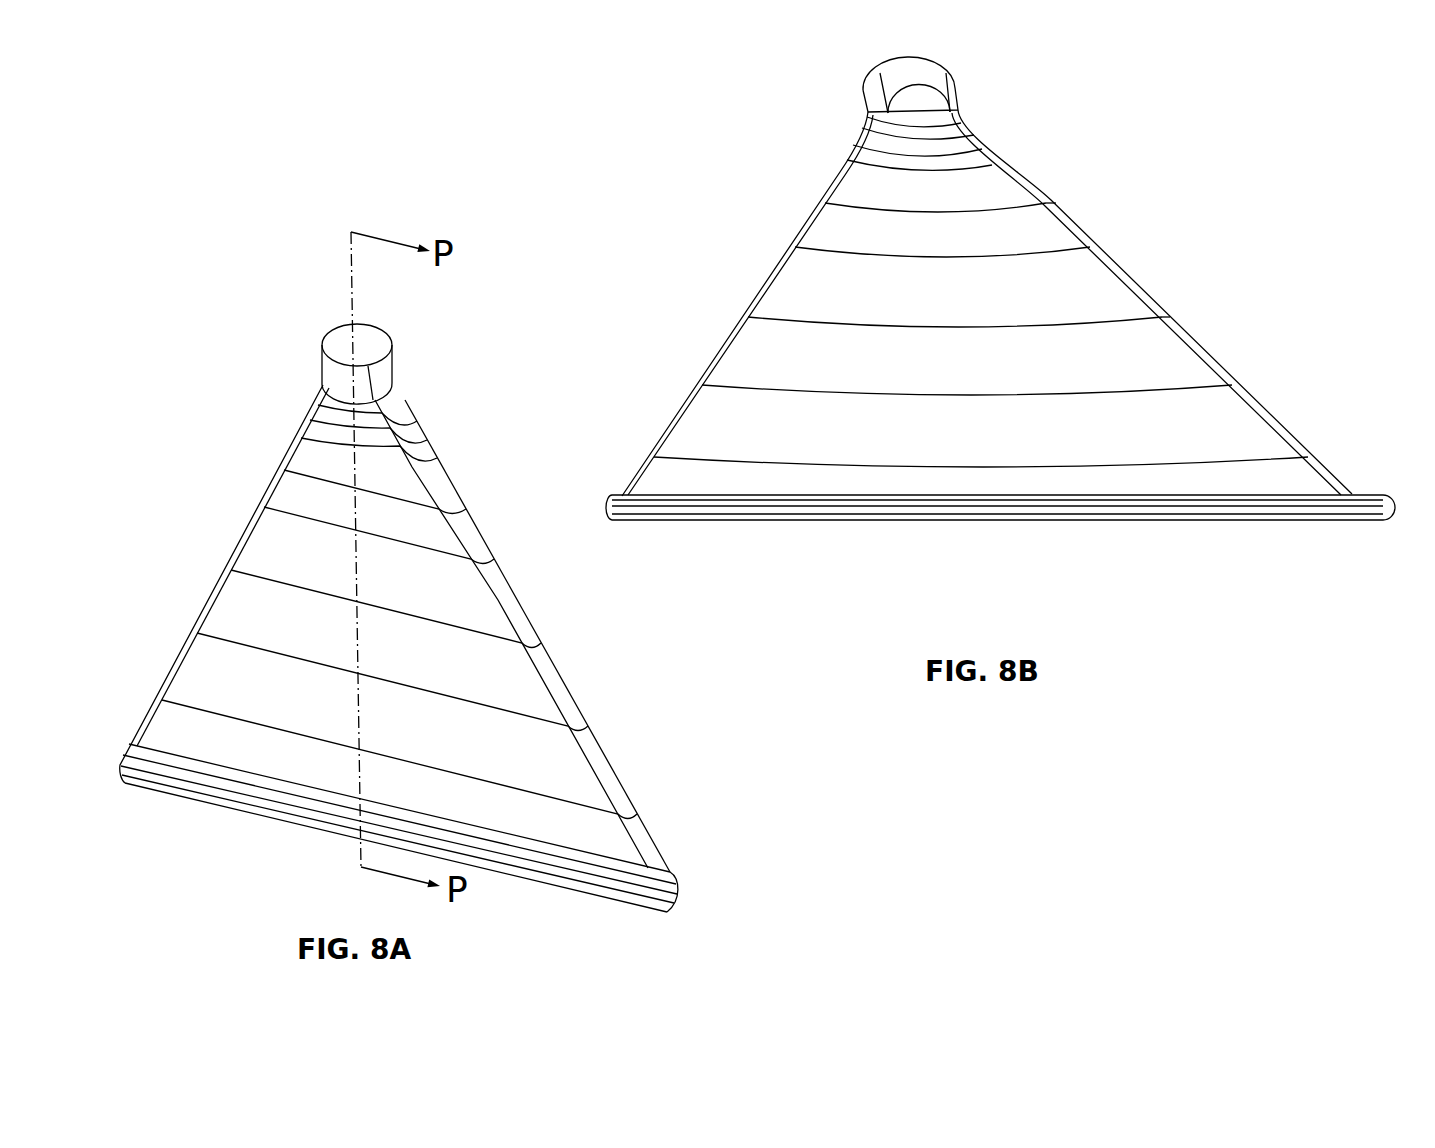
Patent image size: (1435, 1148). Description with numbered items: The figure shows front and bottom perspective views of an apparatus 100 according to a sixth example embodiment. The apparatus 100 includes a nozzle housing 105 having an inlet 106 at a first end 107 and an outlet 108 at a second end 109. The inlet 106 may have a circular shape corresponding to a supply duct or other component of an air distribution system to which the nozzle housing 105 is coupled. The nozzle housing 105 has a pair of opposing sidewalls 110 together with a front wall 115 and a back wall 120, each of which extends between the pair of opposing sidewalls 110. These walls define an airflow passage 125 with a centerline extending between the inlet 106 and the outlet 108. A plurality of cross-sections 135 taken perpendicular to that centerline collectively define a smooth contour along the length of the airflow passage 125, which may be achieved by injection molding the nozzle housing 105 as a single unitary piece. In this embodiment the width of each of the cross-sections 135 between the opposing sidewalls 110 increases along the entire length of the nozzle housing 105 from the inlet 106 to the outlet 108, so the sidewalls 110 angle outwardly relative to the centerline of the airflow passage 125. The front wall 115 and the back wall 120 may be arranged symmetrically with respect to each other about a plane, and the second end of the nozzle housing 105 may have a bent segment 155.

In FIG. 8A, the apparatus 100 is at (208, 326).
In FIG. 8B, the apparatus 100 is at (1115, 108).
In FIG. 8A, the nozzle housing 105 is at (582, 832).
In FIG. 8B, the nozzle housing 105 is at (1080, 233).
In FIG. 8A, the inlet 106 is at (398, 397).
In FIG. 8B, the inlet 106 is at (930, 85).
In FIG. 8A, the first end 107 is at (398, 397).
In FIG. 8B, the first end 107 is at (930, 85).
In FIG. 8A, the outlet 108 is at (327, 822).
In FIG. 8B, the outlet 108 is at (1245, 492).
In FIG. 8A, the second end 109 is at (327, 822).
In FIG. 8B, the second end 109 is at (1245, 492).
In FIG. 8A, the opposing sidewalls 110 is at (288, 450).
In FIG. 8B, the opposing sidewalls 110 is at (832, 183).
In FIG. 8A, the front wall 115 is at (555, 765).
In FIG. 8B, the front wall 115 is at (1162, 358).
In FIG. 8B, the back wall 120 is at (1272, 525).
In FIG. 8A, the airflow passage 125 is at (345, 345).
In FIG. 8B, the airflow passage 125 is at (1080, 505).
In FIG. 8A, the cross-sections 135 is at (296, 448).
In FIG. 8B, the cross-sections 135 is at (847, 160).
In FIG. 8A, the bent segment 155 is at (677, 890).
In FIG. 8B, the bent segment 155 is at (920, 520).